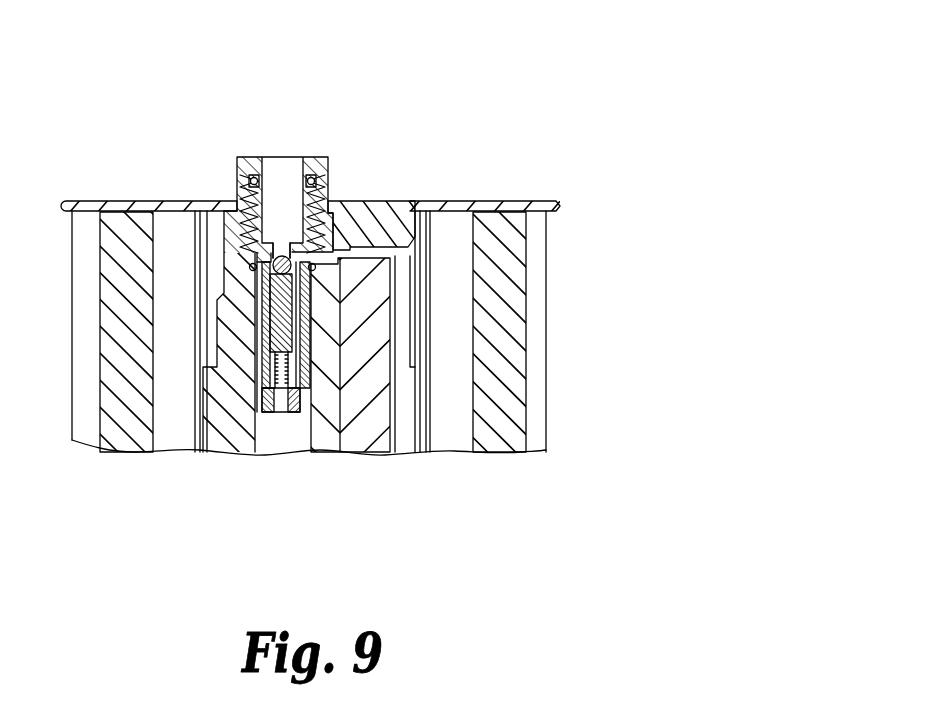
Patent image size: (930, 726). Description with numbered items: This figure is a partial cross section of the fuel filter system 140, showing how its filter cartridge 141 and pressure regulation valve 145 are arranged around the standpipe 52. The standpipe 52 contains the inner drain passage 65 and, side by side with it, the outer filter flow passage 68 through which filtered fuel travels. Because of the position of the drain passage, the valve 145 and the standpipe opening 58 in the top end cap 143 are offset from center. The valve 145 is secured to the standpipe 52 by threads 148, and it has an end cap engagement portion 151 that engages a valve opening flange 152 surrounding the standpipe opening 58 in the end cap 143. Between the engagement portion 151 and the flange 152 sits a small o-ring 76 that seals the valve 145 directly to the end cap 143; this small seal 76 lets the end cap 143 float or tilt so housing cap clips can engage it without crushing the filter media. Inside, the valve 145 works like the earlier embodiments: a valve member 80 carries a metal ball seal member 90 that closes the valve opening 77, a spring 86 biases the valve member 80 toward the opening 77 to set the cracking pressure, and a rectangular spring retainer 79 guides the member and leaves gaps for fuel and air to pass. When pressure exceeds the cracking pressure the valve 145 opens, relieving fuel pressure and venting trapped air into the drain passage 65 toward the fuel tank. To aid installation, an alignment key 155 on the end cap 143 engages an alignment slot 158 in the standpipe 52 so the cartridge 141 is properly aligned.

The filter system 140 is at (522, 130).
The filter cartridge 141 is at (537, 232).
The top end cap 143 is at (95, 208).
The threads 148 is at (240, 250).
The valve opening flange 152 is at (242, 156).
The end cap engagement portion 151 is at (255, 155).
The standpipe opening 58 is at (281, 152).
The pressure regulation valve 145 is at (307, 157).
The o-ring seal 76 is at (249, 181).
The valve opening 77 is at (288, 238).
The seal member 90 is at (357, 222).
The alignment key 155 is at (400, 233).
The alignment slot 158 is at (422, 248).
The valve member 80 is at (270, 309).
The standpipe 52 is at (213, 405).
The spring 86 is at (272, 371).
The spring retainer 79 is at (298, 415).
The drain passage 65 is at (280, 466).
The outer filter flow passage 68 is at (366, 426).